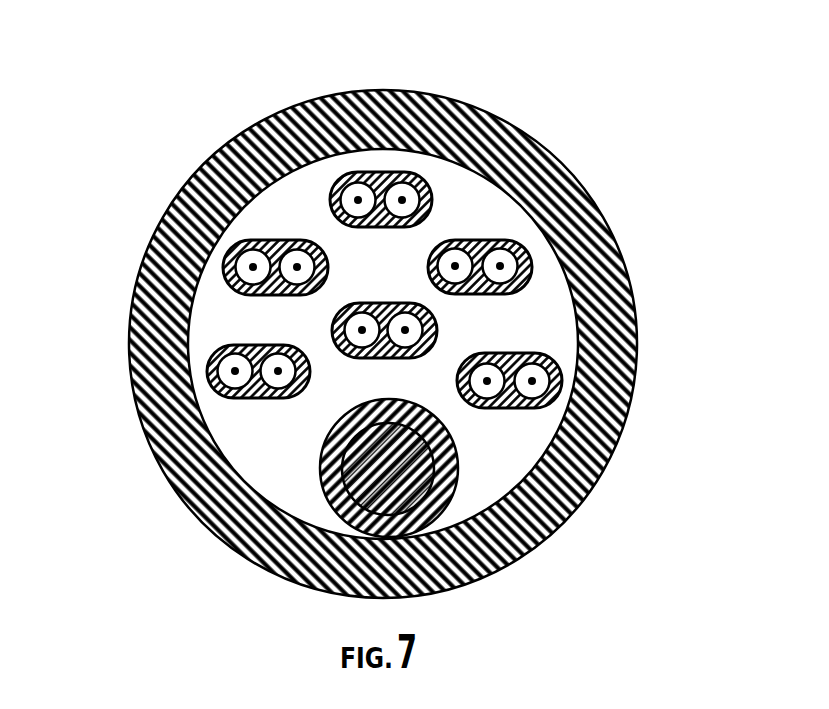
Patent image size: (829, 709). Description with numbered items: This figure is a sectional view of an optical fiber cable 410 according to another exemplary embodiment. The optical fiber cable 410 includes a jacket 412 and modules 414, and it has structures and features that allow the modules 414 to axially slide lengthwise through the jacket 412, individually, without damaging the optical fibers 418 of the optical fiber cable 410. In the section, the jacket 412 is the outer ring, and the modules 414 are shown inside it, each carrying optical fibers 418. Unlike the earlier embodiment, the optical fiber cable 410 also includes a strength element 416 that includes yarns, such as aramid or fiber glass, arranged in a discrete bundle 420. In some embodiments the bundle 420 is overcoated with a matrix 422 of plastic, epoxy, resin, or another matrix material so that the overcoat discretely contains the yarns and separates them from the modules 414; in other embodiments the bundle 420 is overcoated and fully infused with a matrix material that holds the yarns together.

The optical fiber cable 410 is at (368, 309).
The jacket 412 is at (258, 135).
The modules 414 is at (444, 214).
The strength element 416 is at (405, 484).
The optical fibers 418 is at (508, 247).
The bundle 420 is at (378, 462).
The matrix 422 is at (343, 509).